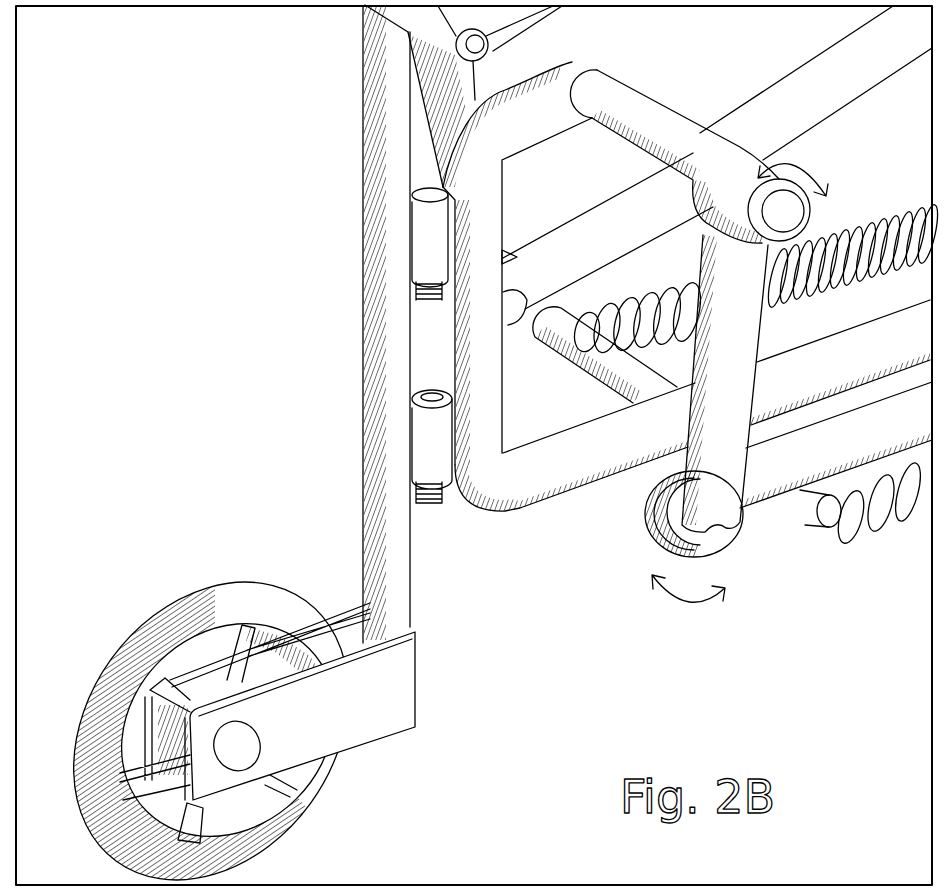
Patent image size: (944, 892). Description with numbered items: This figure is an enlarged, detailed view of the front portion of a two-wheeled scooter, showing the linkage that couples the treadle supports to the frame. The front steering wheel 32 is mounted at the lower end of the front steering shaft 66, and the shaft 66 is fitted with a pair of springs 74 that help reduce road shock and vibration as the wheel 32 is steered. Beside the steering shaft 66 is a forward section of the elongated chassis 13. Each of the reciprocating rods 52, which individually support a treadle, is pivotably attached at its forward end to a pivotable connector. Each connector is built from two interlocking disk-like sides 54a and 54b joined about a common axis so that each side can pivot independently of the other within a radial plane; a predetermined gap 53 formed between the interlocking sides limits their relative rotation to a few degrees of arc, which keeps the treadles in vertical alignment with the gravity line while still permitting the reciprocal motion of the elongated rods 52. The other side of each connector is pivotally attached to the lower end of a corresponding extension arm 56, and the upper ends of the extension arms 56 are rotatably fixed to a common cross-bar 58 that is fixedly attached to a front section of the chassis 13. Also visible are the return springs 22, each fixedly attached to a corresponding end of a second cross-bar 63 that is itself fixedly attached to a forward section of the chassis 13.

The elongated chassis 13 is at (558, 503).
The return springs 22 is at (608, 300).
The front steering wheel 32 is at (185, 605).
The reciprocating rods 52 is at (767, 85).
The gap 53 is at (648, 535).
The interlocking disk-like side 54a is at (713, 557).
The interlocking disk-like side 54b is at (650, 475).
The extension arms 56 is at (760, 338).
The cross-bar 58 is at (667, 107).
The cross-bar 63 is at (562, 358).
The front steering shaft 66 is at (367, 363).
The springs 74 is at (367, 305).